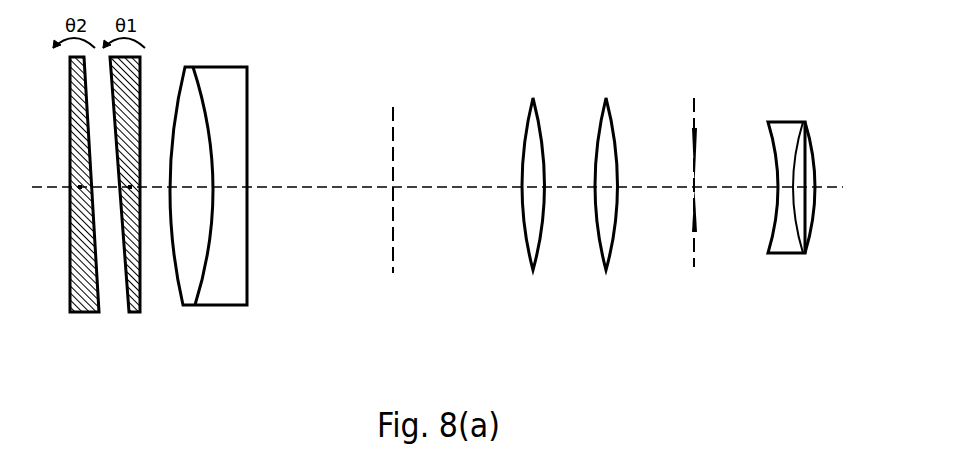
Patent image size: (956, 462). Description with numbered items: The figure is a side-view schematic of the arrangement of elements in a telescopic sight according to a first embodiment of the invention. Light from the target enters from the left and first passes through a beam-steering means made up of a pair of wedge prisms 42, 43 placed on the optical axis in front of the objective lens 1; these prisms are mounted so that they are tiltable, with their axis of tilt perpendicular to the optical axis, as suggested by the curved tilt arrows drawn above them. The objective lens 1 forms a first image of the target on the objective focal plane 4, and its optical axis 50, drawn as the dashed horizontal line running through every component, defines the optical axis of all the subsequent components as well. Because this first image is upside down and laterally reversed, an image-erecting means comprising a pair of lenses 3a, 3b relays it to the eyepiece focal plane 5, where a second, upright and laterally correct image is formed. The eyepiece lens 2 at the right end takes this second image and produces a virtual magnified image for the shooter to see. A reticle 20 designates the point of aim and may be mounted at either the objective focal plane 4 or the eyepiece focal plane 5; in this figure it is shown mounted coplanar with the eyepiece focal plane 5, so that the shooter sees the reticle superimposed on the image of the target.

The objective lens 1 is at (202, 307).
The eyepiece lens 2 is at (783, 255).
The lens of image-erecting means 3a is at (527, 247).
The lens of image-erecting means 3b is at (598, 240).
The objective focal plane 4 is at (394, 142).
The eyepiece focal plane 5 is at (696, 253).
The reticle 20 is at (697, 130).
The wedge prism 42 is at (85, 313).
The wedge prism 43 is at (133, 314).
The optical axis 50 is at (297, 187).